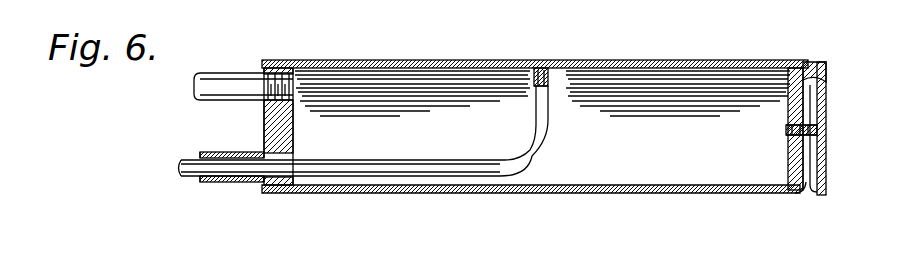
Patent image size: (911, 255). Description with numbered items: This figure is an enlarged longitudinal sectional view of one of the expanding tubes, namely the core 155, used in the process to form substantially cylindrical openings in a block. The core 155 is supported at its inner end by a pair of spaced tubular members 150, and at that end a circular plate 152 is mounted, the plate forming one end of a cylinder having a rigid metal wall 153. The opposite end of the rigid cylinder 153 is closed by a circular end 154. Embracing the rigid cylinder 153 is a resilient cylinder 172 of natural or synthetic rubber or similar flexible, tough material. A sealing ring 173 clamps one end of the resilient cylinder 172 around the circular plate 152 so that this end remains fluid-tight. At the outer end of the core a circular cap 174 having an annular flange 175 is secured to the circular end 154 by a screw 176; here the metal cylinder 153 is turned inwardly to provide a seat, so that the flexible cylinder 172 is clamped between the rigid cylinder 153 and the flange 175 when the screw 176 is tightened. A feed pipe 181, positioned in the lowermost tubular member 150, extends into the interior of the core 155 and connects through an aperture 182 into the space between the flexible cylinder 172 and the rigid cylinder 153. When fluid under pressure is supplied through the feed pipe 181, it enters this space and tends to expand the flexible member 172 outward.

The tubular member 150 is at (228, 72).
The circular plate 152 is at (295, 102).
The metal wall cylinder 153 is at (446, 74).
The circular end 154 is at (776, 68).
The core 155 is at (573, 62).
The resilient cylinder 172 is at (494, 62).
The sealing ring 173 is at (280, 60).
The circular cap 174 is at (826, 100).
The annular flange 175 is at (820, 78).
The screw 176 is at (828, 130).
The feed pipe 181 is at (356, 158).
The aperture 182 is at (566, 72).